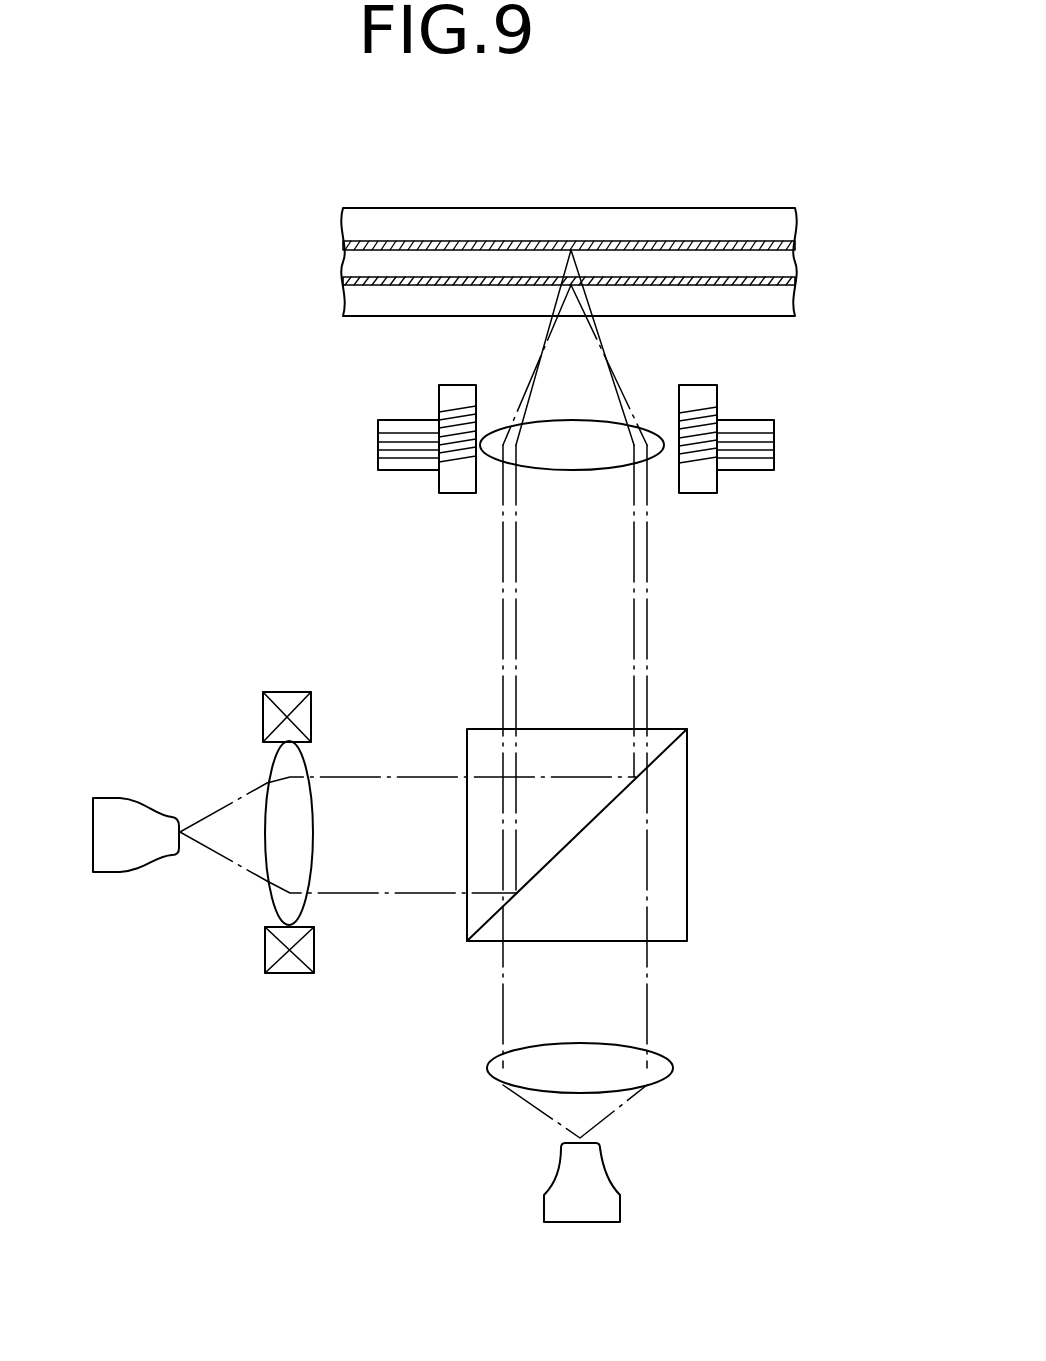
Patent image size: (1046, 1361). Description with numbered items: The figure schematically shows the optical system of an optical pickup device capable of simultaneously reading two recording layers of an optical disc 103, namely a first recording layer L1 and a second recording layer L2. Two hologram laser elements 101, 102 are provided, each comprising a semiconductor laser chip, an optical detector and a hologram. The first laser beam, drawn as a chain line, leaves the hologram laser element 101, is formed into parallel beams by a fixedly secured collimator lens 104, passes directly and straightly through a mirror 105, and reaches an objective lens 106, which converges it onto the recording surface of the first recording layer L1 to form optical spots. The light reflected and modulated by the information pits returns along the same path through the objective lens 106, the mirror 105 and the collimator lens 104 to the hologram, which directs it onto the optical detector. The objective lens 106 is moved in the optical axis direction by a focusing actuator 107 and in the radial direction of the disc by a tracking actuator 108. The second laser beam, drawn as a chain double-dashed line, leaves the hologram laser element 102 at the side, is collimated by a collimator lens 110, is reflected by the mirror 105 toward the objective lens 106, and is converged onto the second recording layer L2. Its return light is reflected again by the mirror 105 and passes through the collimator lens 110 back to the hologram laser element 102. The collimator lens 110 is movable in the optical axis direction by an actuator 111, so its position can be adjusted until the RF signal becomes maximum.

The hologram laser element 101 is at (573, 1225).
The hologram laser element 102 is at (137, 800).
The optical disc 103 is at (733, 205).
The collimator lens 104 is at (675, 1068).
The mirror 105 is at (688, 828).
The objective lens 106 is at (576, 472).
The focusing actuator 107 is at (458, 385).
The tracking actuator 108 is at (402, 420).
The collimator lens 110 is at (268, 893).
The actuator 111 is at (287, 690).
The first recording layer L1 is at (343, 278).
The second recording layer L2 is at (343, 243).